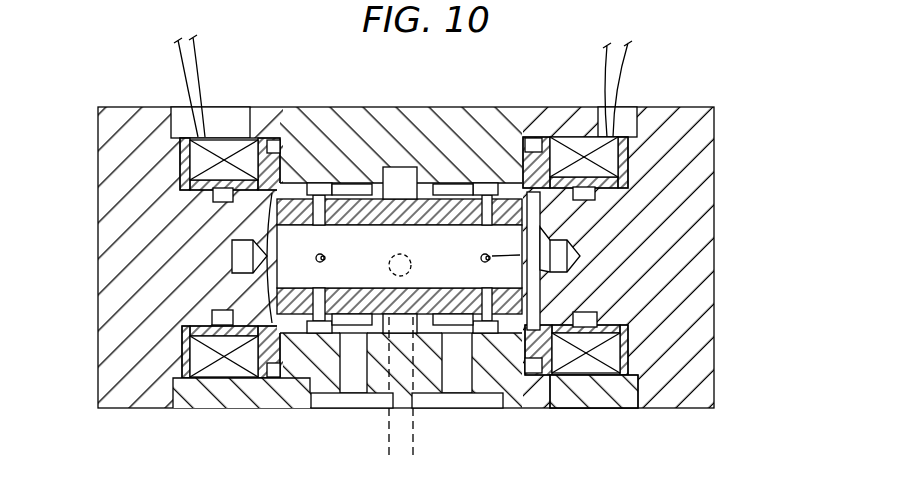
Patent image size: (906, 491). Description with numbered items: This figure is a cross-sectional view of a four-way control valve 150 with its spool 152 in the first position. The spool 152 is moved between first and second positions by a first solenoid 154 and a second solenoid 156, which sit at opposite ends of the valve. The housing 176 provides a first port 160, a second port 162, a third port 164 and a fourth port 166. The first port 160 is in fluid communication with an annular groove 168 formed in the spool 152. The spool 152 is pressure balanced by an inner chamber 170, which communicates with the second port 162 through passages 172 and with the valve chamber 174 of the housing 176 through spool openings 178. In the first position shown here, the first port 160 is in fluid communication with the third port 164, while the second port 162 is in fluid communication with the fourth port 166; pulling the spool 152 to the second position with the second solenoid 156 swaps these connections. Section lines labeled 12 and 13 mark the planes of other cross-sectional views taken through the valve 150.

The section line 12- 12 is at (487, 213).
The section line 13- 13 is at (400, 150).
The four-way control valve 150 is at (728, 350).
The spool 152 is at (388, 225).
The first solenoid 154 is at (165, 167).
The second solenoid 156 is at (628, 171).
The first port 160 is at (410, 400).
The second port 162 is at (540, 255).
The third port 164 is at (355, 398).
The fourth port 166 is at (465, 398).
The annular groove 168 is at (407, 195).
The inner chamber 170 is at (462, 266).
The passages 172 is at (520, 197).
The valve chamber 174 is at (540, 298).
The housing 176 is at (672, 400).
The spool openings 178 is at (275, 258).